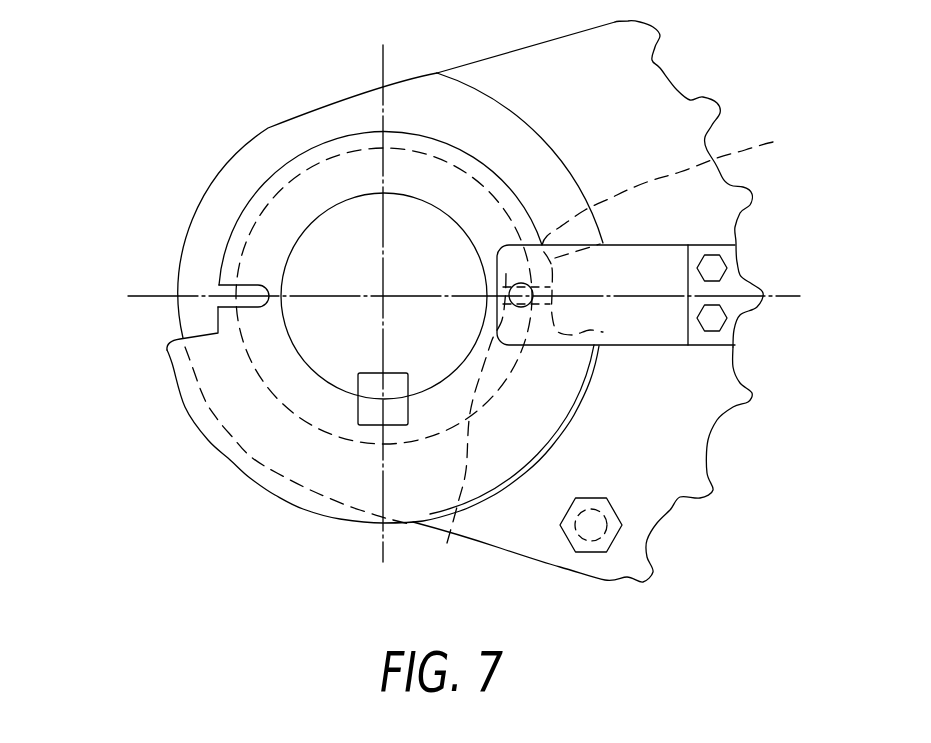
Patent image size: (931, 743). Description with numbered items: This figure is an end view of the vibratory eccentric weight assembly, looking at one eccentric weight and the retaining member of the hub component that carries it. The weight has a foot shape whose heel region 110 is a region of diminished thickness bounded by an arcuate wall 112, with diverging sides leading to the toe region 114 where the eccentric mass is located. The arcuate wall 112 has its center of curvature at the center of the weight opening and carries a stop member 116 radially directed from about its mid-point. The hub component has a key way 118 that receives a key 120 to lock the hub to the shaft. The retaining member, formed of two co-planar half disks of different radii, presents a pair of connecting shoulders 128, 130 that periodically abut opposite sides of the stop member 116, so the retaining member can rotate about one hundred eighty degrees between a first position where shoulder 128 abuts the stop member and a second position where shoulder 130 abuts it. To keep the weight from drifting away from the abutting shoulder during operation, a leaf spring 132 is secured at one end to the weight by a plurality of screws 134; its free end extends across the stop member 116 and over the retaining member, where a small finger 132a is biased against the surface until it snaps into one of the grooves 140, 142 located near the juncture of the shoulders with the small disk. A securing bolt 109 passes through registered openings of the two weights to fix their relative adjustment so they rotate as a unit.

The securing bolt 109 is at (620, 512).
The heel region 110 is at (268, 128).
The arcuate wall 112 is at (478, 88).
The toe region 114 is at (660, 65).
The stop member 116 is at (677, 200).
The key way 118 is at (368, 425).
The key 120 is at (355, 402).
The connecting shoulder 128 is at (172, 342).
The connecting shoulder 130 is at (603, 332).
The leaf spring 132 is at (640, 265).
The finger 132a is at (515, 308).
The screws 134 is at (730, 268).
The groove 140 is at (242, 284).
The groove 142 is at (447, 543).